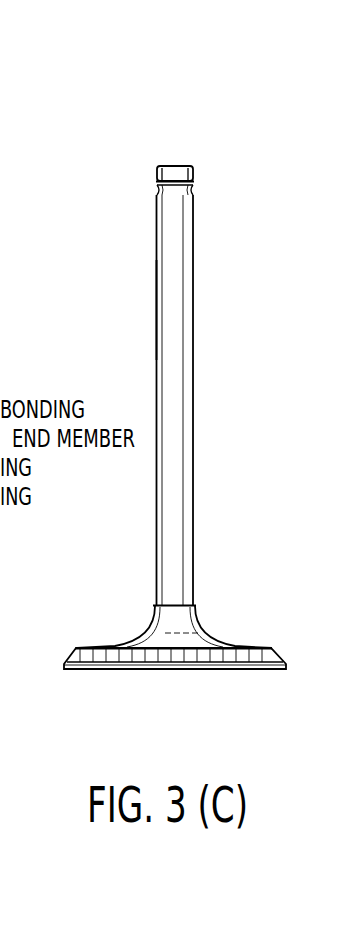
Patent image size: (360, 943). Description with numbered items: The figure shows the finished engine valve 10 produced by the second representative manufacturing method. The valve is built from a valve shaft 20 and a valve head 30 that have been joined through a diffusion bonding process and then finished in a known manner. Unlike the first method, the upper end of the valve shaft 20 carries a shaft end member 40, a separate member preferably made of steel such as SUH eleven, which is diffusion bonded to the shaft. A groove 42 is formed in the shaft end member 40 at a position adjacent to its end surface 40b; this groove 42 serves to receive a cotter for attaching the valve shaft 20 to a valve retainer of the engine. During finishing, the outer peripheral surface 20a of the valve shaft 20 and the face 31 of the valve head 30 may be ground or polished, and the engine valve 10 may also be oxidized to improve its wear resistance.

The engine valve 10 is at (169, 375).
The valve shaft 20 is at (170, 344).
The outer peripheral surface 20a is at (159, 309).
The valve head 30 is at (159, 606).
The face 31 is at (68, 657).
The shaft end member 40 is at (164, 138).
The end surface 40b is at (173, 163).
The groove 42 is at (155, 186).